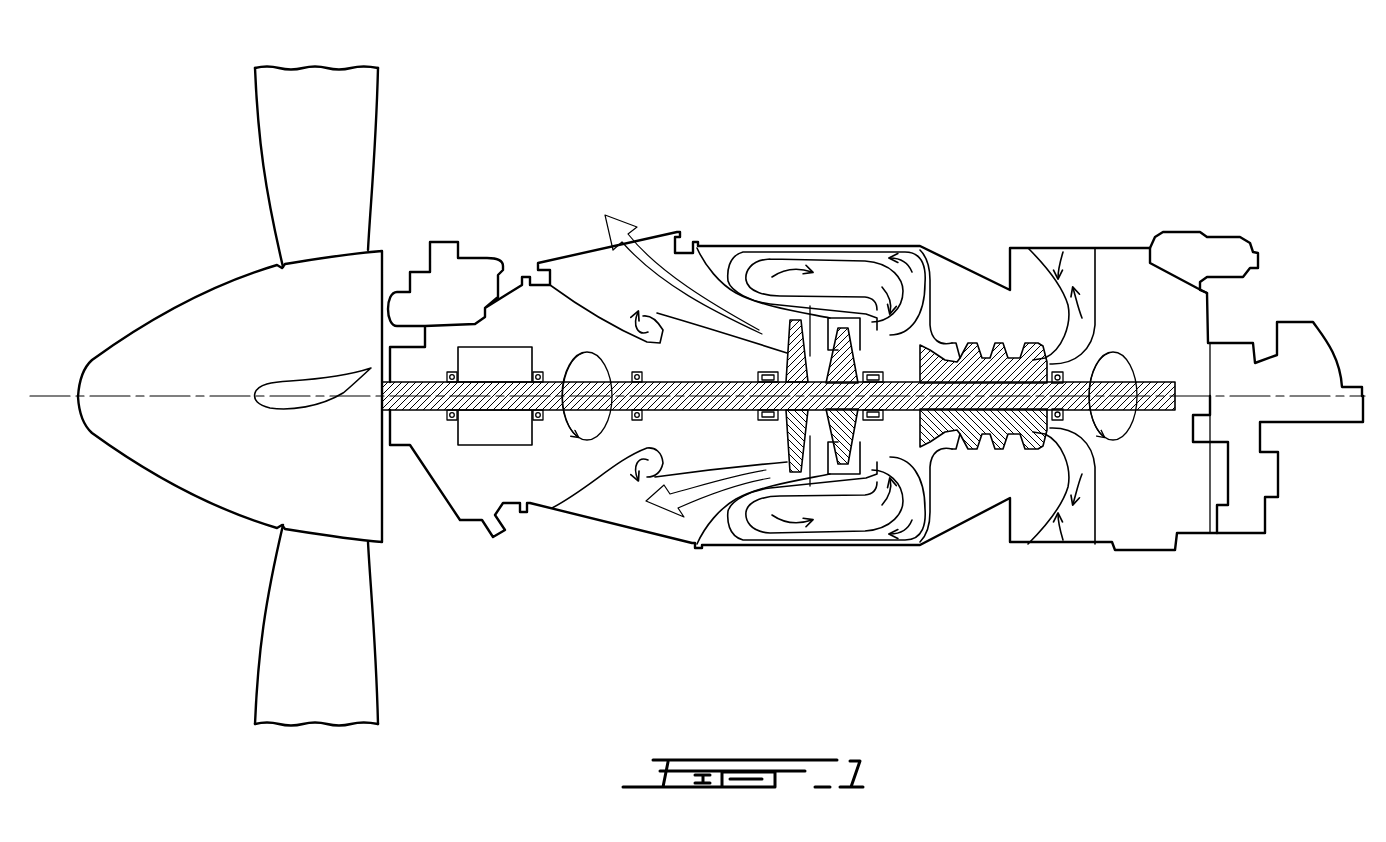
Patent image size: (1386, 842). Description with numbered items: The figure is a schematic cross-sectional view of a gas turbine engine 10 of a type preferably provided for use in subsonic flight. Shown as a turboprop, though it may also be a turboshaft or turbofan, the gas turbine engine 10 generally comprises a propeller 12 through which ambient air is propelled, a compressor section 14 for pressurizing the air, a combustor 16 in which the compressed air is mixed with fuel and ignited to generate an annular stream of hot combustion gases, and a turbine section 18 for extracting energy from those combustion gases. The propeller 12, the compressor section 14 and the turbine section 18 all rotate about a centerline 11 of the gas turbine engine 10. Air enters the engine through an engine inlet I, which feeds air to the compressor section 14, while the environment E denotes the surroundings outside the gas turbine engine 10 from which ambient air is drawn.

The gas turbine engine 10 is at (1040, 125).
The centerline 11 is at (1322, 400).
The propeller 12 is at (345, 97).
The compressor section 14 is at (986, 330).
The combustor 16 is at (835, 270).
The turbine section 18 is at (780, 455).
The engine inlet I is at (1085, 243).
The environment E is at (1291, 165).